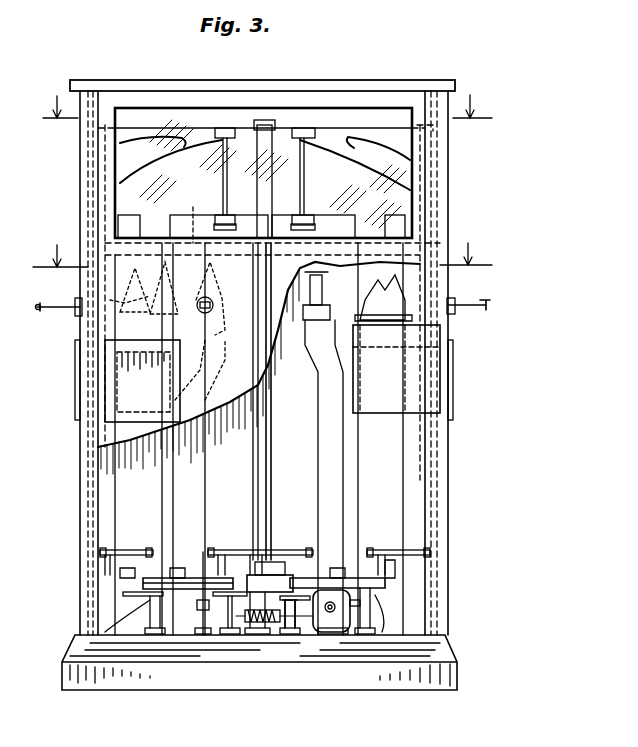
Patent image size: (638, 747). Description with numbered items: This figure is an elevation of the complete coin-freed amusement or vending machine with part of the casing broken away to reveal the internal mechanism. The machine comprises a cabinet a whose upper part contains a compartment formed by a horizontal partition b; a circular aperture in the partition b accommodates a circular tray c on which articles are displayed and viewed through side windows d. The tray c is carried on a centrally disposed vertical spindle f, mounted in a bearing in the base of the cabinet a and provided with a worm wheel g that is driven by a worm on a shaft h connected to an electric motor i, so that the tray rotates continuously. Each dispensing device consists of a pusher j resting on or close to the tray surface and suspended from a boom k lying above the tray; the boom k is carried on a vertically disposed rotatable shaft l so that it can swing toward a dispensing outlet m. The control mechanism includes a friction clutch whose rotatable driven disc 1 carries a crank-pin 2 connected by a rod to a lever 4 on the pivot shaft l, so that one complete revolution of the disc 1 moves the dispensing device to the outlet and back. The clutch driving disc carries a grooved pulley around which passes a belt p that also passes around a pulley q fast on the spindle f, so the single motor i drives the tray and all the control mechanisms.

The driven disc 1 is at (345, 578).
The crank-pin 2 is at (384, 552).
The lever 4 is at (268, 556).
The cabinet a is at (66, 478).
The horizontal partition b is at (420, 247).
The circular tray c is at (192, 217).
The side windows d is at (345, 122).
The vertical spindle f is at (272, 440).
The worm wheel g is at (250, 593).
The shaft h is at (298, 612).
The electric motor i is at (328, 634).
The pusher j is at (308, 230).
The boom k is at (320, 137).
The rotatable shaft l is at (420, 497).
The dispensing outlet m is at (410, 412).
The belt p is at (285, 585).
The pulley q is at (250, 576).